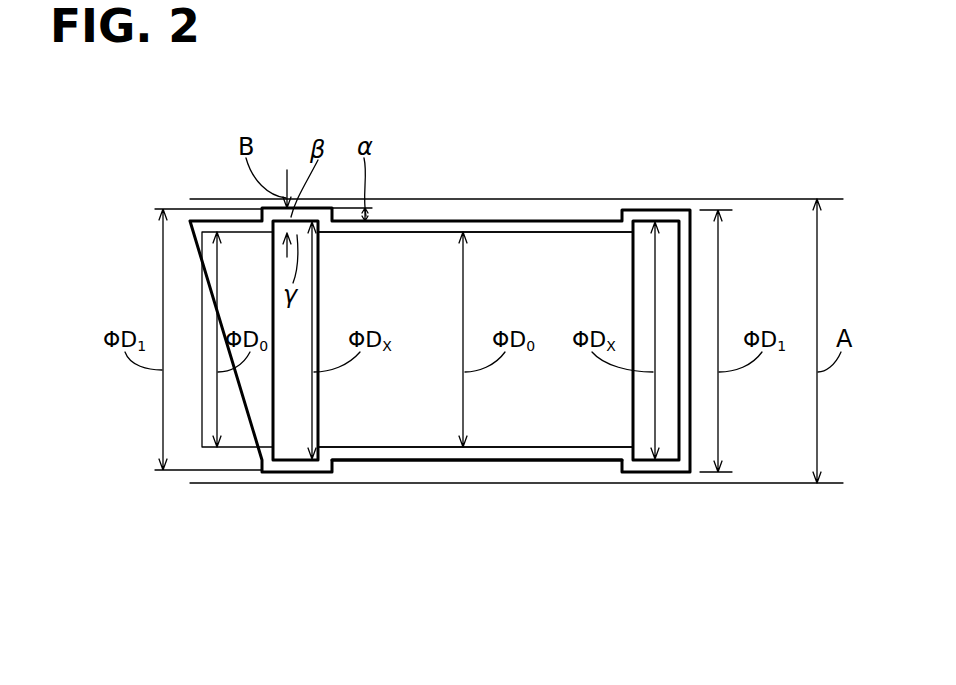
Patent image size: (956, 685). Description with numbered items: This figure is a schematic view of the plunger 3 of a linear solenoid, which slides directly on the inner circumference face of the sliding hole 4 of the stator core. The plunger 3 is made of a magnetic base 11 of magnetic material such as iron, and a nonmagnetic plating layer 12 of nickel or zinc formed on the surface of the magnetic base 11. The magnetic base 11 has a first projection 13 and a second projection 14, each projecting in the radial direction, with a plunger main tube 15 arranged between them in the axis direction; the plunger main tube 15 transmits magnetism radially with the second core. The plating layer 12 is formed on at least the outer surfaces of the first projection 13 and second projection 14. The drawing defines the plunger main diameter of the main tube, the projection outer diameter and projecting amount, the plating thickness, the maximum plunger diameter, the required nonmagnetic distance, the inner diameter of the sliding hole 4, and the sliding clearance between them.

The plunger 3 is at (440, 393).
The sliding hole 4 is at (434, 199).
The magnetic base 11 is at (410, 428).
The plating layer 12 is at (455, 450).
The first projection 13 is at (292, 474).
The second projection 14 is at (667, 474).
The plunger main tube 15 is at (392, 522).